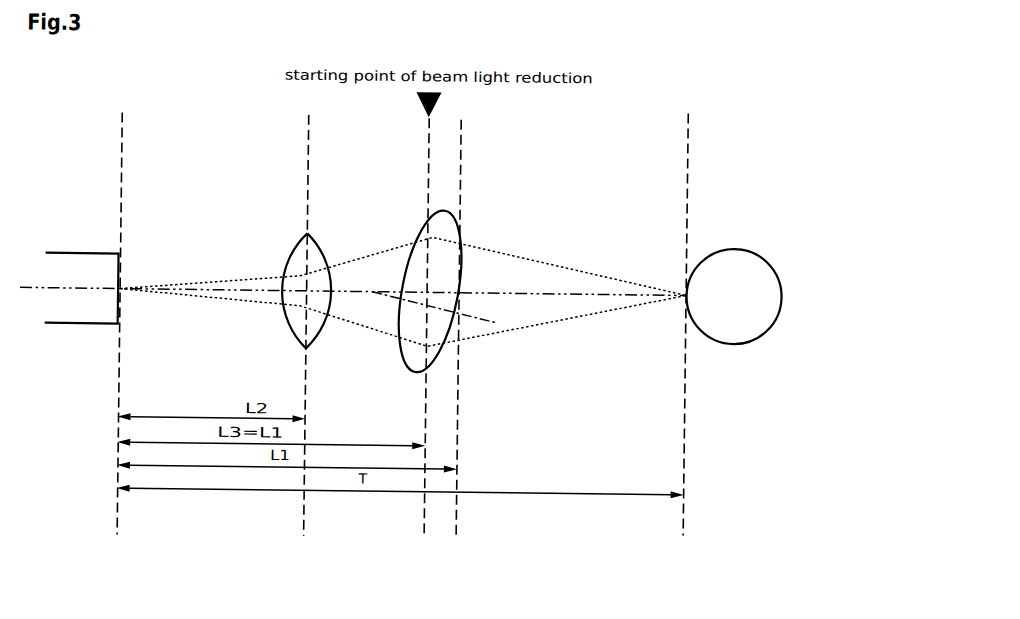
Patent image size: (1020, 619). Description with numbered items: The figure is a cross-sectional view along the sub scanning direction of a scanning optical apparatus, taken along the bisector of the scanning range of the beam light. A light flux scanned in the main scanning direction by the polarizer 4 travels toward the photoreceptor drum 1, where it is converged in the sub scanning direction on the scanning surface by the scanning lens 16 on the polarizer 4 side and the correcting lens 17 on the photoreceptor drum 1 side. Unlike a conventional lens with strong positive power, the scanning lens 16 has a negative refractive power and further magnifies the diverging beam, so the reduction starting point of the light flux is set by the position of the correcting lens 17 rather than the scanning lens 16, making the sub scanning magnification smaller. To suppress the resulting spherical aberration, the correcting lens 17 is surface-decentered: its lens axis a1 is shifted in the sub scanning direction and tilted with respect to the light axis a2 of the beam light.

The polarizer 4 is at (61, 257).
The scanning lens 16 is at (310, 235).
The correcting lens 17 is at (440, 367).
The photoreceptor drum 1 is at (704, 258).
The lens axis a1 is at (488, 318).
The light axis a2 is at (523, 291).